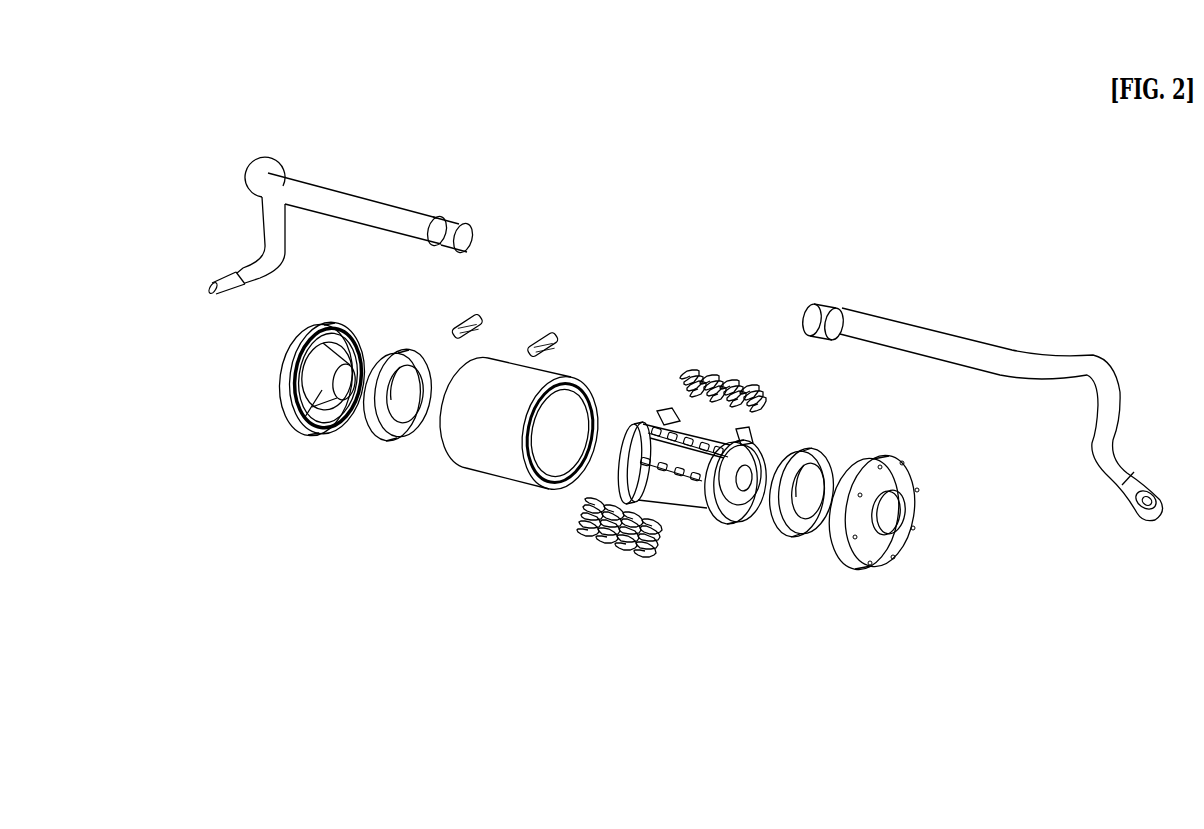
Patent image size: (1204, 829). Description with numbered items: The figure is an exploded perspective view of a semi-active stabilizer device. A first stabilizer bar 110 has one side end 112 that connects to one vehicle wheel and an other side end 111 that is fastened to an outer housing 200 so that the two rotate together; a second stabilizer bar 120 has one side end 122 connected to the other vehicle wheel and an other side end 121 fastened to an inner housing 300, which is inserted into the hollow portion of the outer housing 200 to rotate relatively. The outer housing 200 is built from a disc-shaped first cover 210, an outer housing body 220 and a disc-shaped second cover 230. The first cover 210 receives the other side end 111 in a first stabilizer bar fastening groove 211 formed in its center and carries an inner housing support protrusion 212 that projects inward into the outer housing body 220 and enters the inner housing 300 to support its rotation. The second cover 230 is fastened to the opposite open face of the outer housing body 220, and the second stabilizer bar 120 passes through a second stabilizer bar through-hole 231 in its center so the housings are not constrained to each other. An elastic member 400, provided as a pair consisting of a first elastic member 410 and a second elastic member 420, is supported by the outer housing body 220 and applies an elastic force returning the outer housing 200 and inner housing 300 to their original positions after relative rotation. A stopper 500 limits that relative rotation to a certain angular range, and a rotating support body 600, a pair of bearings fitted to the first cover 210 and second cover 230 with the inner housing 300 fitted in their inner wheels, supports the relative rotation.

The first stabilizer bar 110 is at (354, 205).
The other side end of the first stabilizer bar 111 is at (450, 216).
The one side end of the first stabilizer bar 112 is at (222, 292).
The second stabilizer bar 120 is at (934, 343).
The other side end of the second stabilizer bar 121 is at (813, 303).
The one side end of the second stabilizer bar 122 is at (1150, 489).
The outer housing 200 is at (197, 578).
The first cover 210 is at (285, 419).
The first stabilizer bar fastening groove 211 is at (346, 386).
The inner housing support protrusion 212 is at (307, 428).
The outer housing body 220 is at (500, 458).
The second cover 230 is at (903, 539).
The second stabilizer bar through-hole 231 is at (893, 512).
The inner housing 300 is at (692, 537).
The elastic member 400 is at (197, 672).
The first elastic member 410 is at (650, 553).
The second elastic member 420 is at (768, 380).
The stopper 500 is at (472, 312).
The rotating support body 600 is at (400, 433).